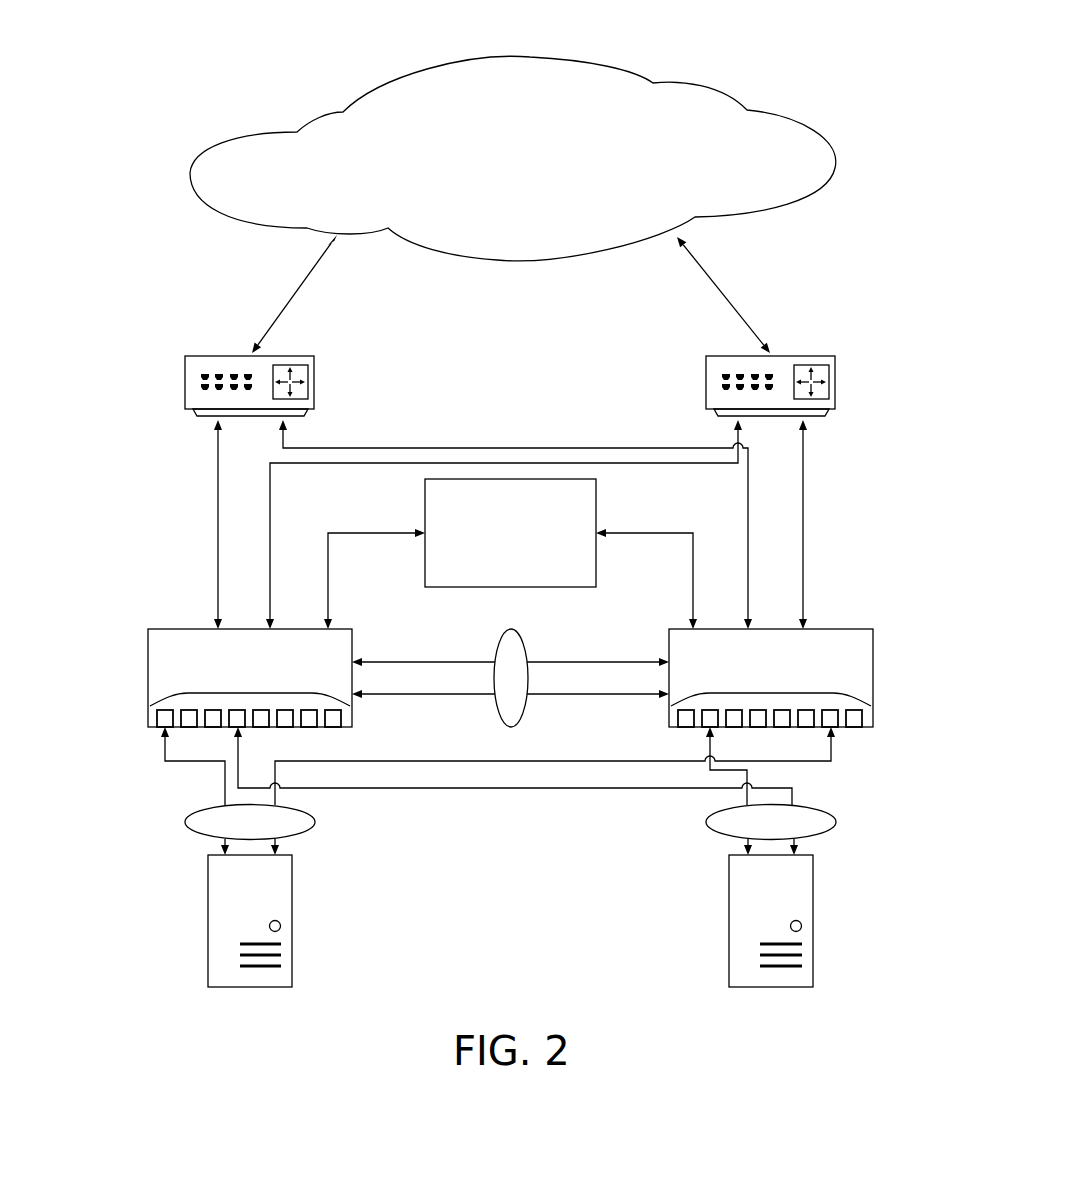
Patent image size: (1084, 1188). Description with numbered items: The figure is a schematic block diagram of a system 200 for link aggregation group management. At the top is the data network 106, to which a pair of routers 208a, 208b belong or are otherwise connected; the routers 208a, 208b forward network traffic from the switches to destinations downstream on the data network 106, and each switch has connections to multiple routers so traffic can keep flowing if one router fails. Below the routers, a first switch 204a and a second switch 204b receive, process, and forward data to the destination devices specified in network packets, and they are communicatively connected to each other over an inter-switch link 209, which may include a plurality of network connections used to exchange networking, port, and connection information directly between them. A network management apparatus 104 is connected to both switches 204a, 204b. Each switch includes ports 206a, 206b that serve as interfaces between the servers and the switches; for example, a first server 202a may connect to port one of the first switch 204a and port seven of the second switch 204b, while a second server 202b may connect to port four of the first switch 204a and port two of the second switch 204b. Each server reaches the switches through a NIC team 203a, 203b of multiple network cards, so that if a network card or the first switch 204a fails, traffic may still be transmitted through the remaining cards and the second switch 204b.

The system 200 is at (164, 55).
The data network 106 is at (496, 175).
The network management apparatus 104 is at (496, 581).
The router 208a is at (185, 385).
The router 208b is at (706, 385).
The first switch 204a is at (203, 678).
The second switch 204b is at (811, 678).
The port 206a is at (250, 693).
The port 206b is at (771, 693).
The inter-switch link 209 is at (497, 720).
The NIC team 203a is at (197, 836).
The NIC team 203b is at (718, 833).
The first server 202a is at (208, 895).
The second server 202b is at (729, 895).